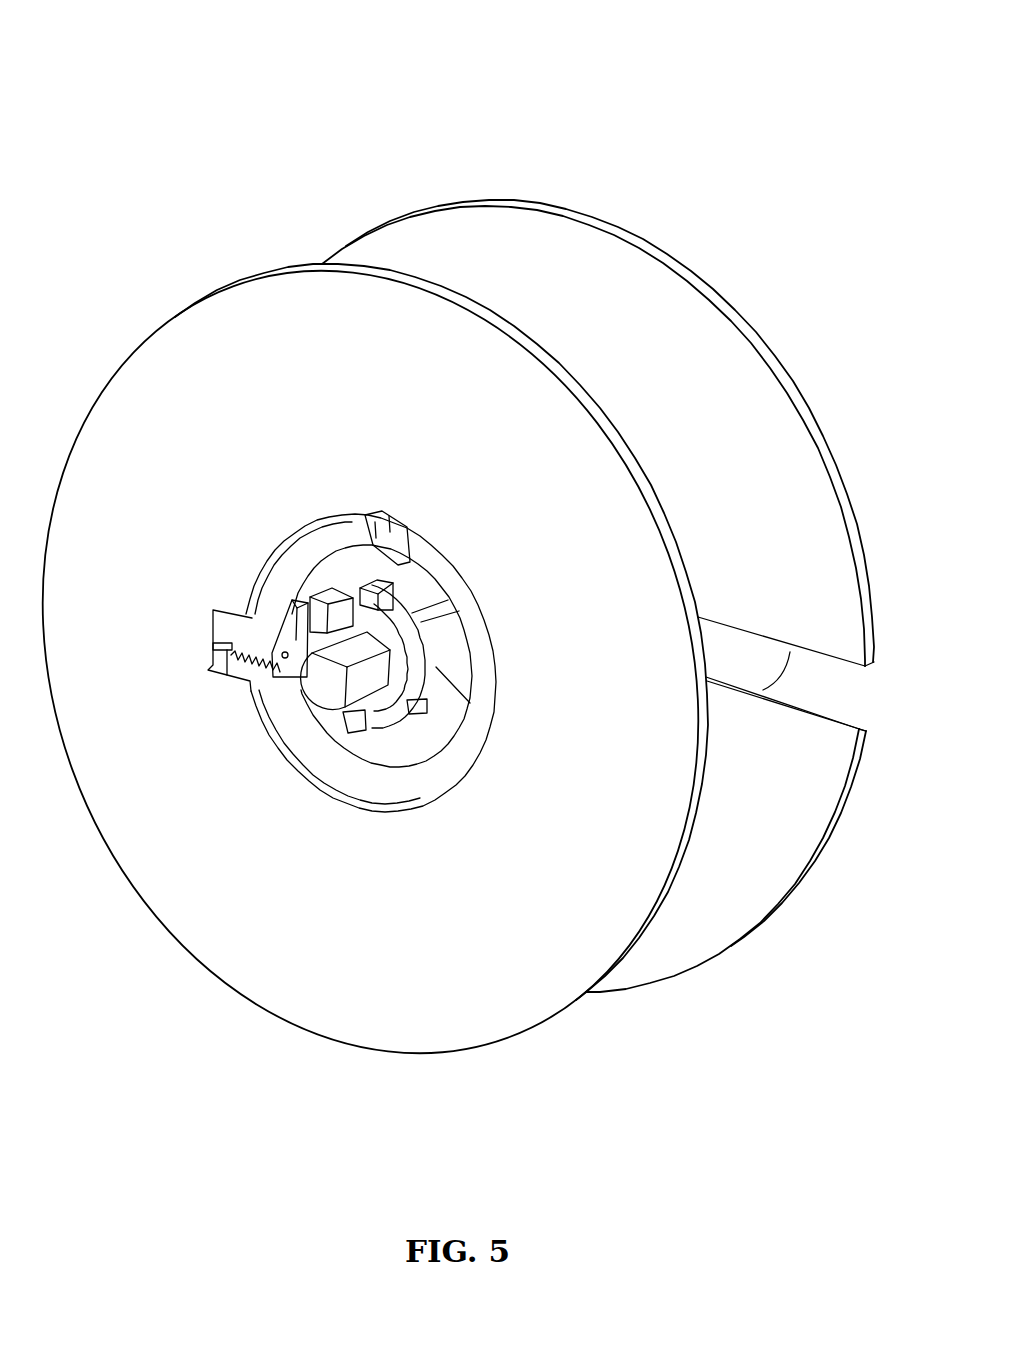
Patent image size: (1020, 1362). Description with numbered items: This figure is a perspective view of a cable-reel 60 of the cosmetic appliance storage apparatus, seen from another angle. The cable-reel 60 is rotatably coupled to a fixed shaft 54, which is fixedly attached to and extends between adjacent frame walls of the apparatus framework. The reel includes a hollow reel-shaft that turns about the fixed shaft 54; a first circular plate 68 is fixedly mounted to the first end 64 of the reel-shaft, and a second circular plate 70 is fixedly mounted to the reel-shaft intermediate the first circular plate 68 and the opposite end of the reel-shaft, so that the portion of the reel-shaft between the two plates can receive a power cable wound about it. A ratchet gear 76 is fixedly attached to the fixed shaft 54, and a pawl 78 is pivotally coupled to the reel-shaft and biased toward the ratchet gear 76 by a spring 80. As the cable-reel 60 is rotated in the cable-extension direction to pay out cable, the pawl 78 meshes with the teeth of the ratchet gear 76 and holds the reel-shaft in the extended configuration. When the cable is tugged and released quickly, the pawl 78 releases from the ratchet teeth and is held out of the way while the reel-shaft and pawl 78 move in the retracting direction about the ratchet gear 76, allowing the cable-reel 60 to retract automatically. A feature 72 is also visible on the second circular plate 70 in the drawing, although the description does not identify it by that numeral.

The cable-reel 60 is at (697, 64).
The first circular plate 68 is at (162, 322).
The second circular plate 70 is at (460, 212).
The slot 72 is at (801, 656).
The first end 64 is at (434, 793).
The ratchet gear 76 is at (418, 660).
The shaft 54 is at (352, 690).
The pawl 78 is at (284, 612).
The spring 80 is at (242, 674).